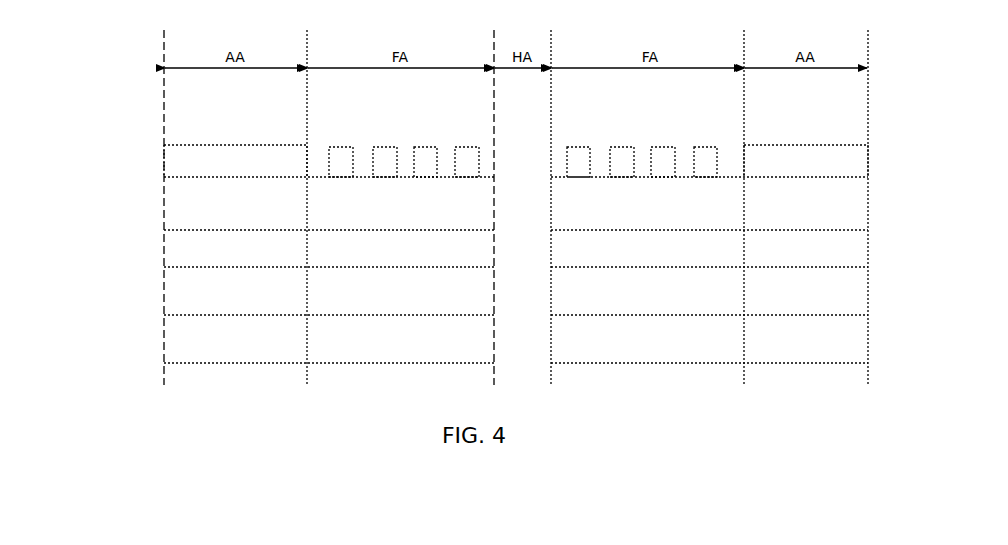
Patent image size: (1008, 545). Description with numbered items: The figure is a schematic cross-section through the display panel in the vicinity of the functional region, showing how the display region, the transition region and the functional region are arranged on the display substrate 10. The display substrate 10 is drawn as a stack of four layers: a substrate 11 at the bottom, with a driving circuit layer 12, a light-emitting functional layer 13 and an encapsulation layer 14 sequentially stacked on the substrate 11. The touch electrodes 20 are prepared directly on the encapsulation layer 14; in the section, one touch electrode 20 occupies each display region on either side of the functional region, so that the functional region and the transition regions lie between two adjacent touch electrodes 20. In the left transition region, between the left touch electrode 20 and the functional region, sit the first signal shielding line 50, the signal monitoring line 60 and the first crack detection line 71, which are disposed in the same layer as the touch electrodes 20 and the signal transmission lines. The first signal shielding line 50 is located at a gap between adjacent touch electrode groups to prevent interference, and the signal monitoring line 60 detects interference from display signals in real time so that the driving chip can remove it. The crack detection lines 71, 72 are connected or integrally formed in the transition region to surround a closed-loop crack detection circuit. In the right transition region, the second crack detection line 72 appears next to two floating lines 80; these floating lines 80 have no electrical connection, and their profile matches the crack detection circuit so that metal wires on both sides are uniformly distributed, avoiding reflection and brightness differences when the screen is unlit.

The display substrate 10 is at (466, 270).
The substrate 11 is at (484, 335).
The driving circuit layer 12 is at (233, 293).
The light-emitting functional layer 13 is at (233, 248).
The encapsulation layer 14 is at (233, 205).
The touch electrode 20 is at (230, 162).
The first signal shielding line 50 is at (338, 160).
The signal monitoring line 60 is at (381, 160).
The first crack detection line 71 is at (423, 160).
The second crack detection line 72 is at (577, 160).
The floating line 80 is at (661, 162).